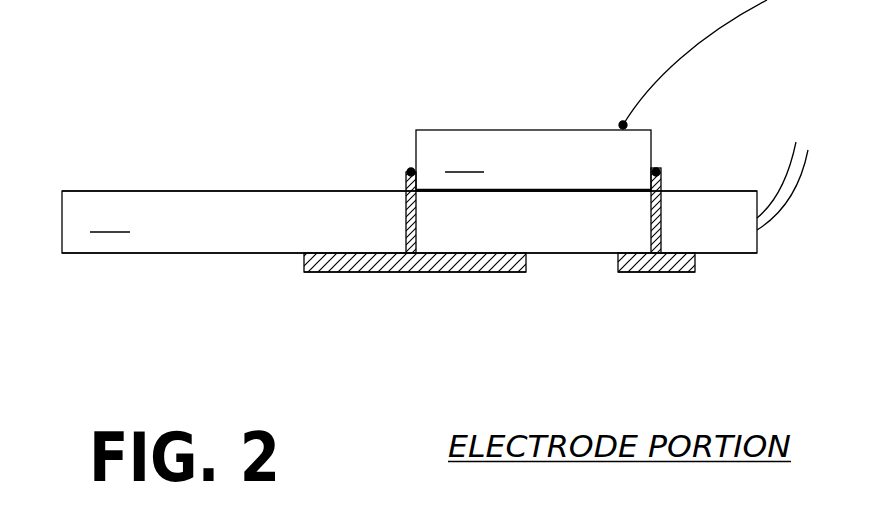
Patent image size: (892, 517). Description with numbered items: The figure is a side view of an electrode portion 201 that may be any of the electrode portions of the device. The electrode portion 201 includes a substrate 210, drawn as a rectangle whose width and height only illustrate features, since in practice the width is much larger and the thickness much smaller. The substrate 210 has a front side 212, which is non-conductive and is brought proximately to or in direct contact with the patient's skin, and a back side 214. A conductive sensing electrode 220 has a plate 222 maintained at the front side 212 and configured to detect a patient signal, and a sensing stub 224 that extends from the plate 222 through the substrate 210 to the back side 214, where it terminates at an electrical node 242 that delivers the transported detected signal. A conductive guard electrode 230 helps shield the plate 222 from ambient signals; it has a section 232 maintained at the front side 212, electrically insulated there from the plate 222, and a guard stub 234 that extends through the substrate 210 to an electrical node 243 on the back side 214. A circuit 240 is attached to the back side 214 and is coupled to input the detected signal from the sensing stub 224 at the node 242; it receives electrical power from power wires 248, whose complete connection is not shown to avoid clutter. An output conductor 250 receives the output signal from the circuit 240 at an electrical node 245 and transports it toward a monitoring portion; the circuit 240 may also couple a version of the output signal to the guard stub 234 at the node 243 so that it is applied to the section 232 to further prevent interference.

The electrode portion 201 is at (127, 52).
The substrate 210 is at (409, 222).
The front side 212 is at (212, 257).
The back side 214 is at (205, 188).
The sensing electrode 220 is at (357, 274).
The plate 222 is at (426, 275).
The sensing stub 224 is at (404, 228).
The guard electrode 230 is at (680, 273).
The section 232 is at (640, 275).
The guard stub 234 is at (664, 228).
The circuit 240 is at (533, 160).
The electrical node 242 is at (405, 169).
The electrical node 243 is at (662, 169).
The electrical node 245 is at (618, 121).
The power wires 248 is at (801, 170).
The output conductor 250 is at (725, 24).